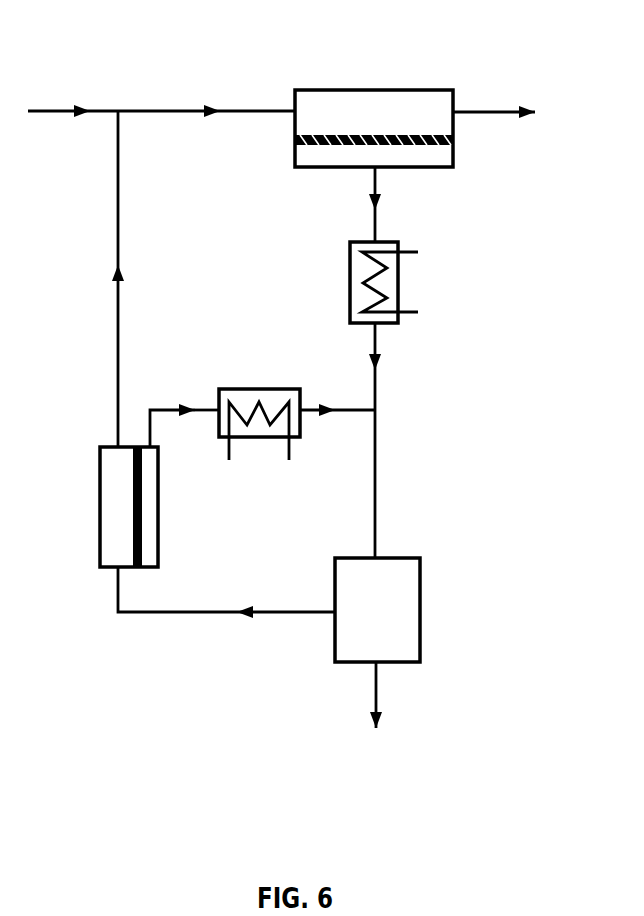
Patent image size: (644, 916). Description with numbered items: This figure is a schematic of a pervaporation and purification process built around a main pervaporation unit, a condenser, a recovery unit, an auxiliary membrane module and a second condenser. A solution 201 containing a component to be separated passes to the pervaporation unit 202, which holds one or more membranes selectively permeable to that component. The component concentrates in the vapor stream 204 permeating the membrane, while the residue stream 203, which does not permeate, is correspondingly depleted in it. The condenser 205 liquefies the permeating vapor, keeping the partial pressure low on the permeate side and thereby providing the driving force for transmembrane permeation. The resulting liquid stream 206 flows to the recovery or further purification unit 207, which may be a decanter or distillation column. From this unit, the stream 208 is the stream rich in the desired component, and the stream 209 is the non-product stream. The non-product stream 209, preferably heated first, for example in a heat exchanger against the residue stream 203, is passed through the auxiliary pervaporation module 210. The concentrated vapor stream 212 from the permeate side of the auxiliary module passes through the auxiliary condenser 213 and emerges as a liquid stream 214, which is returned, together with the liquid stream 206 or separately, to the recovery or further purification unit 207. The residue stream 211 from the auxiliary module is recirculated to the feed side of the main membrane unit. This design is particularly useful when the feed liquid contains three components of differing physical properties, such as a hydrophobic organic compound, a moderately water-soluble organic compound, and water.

The solution 201 is at (161, 91).
The pervaporation unit 202 is at (366, 90).
The residue stream 203 is at (518, 112).
The vapor stream 204 is at (346, 204).
The condenser 205 is at (398, 241).
The liquid stream 206 is at (402, 440).
The recovery or further purification unit 207 is at (421, 562).
The stream rich in the desired component 208 is at (376, 713).
The non-product stream 209 is at (226, 610).
The auxiliary pervaporation module 210 is at (100, 538).
The residue stream 211 is at (84, 279).
The concentrated vapor stream 212 is at (184, 408).
The auxiliary condenser 213 is at (240, 389).
The liquid stream 214 is at (337, 390).